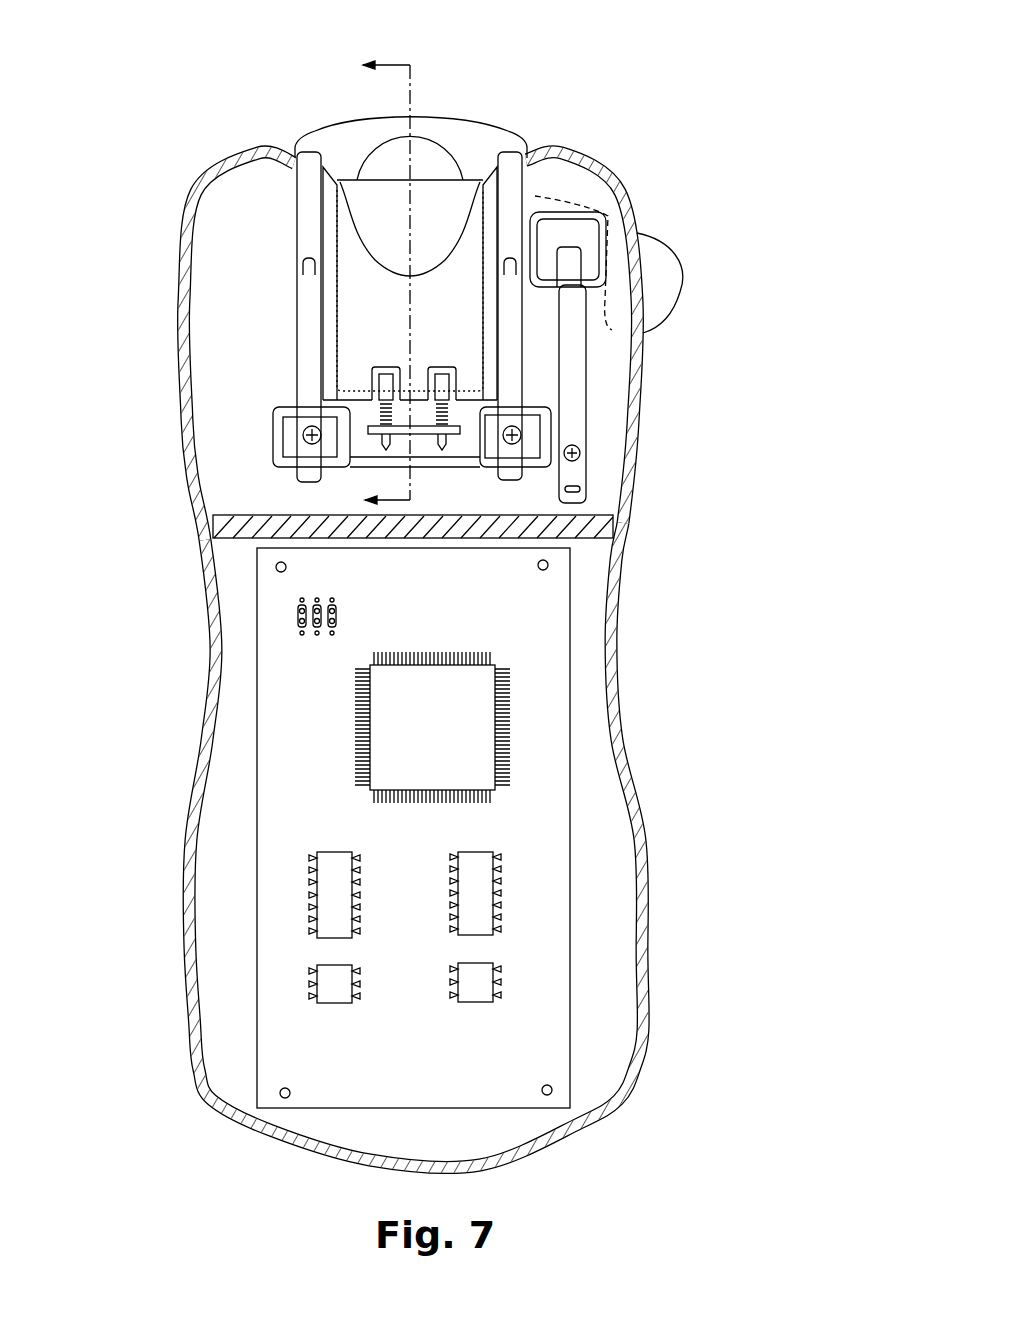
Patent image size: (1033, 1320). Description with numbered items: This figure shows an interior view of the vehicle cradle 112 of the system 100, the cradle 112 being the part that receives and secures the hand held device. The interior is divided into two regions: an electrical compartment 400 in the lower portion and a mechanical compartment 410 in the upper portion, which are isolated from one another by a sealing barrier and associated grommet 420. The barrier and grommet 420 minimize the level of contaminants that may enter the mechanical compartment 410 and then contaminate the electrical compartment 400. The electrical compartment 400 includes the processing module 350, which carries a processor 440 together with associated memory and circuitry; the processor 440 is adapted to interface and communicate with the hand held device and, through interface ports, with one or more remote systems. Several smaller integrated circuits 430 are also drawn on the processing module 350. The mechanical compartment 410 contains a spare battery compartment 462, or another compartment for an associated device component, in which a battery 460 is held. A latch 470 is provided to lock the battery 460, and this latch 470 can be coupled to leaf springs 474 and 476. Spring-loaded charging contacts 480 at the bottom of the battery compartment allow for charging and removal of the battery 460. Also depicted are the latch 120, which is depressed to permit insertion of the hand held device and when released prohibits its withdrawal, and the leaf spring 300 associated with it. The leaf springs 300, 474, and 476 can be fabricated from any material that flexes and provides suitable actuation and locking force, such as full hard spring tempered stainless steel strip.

The system 100 is at (433, 596).
The vehicle cradle 112 is at (592, 157).
The latch 120 is at (660, 236).
The leaf spring 300 is at (590, 361).
The processing module 350 is at (291, 730).
The electrical compartment 400 is at (592, 841).
The mechanical compartment 410 is at (595, 419).
The sealing barrier and associated grommet 420 is at (590, 546).
The integrated circuits 430 is at (401, 1004).
The processor 440 is at (441, 698).
The battery 460 is at (371, 324).
The spare battery compartment 462 is at (322, 246).
The latch 470 is at (487, 114).
The leaf spring 474 is at (296, 367).
The leaf spring 476 is at (527, 370).
The spring-loaded charging contacts 480 is at (421, 452).